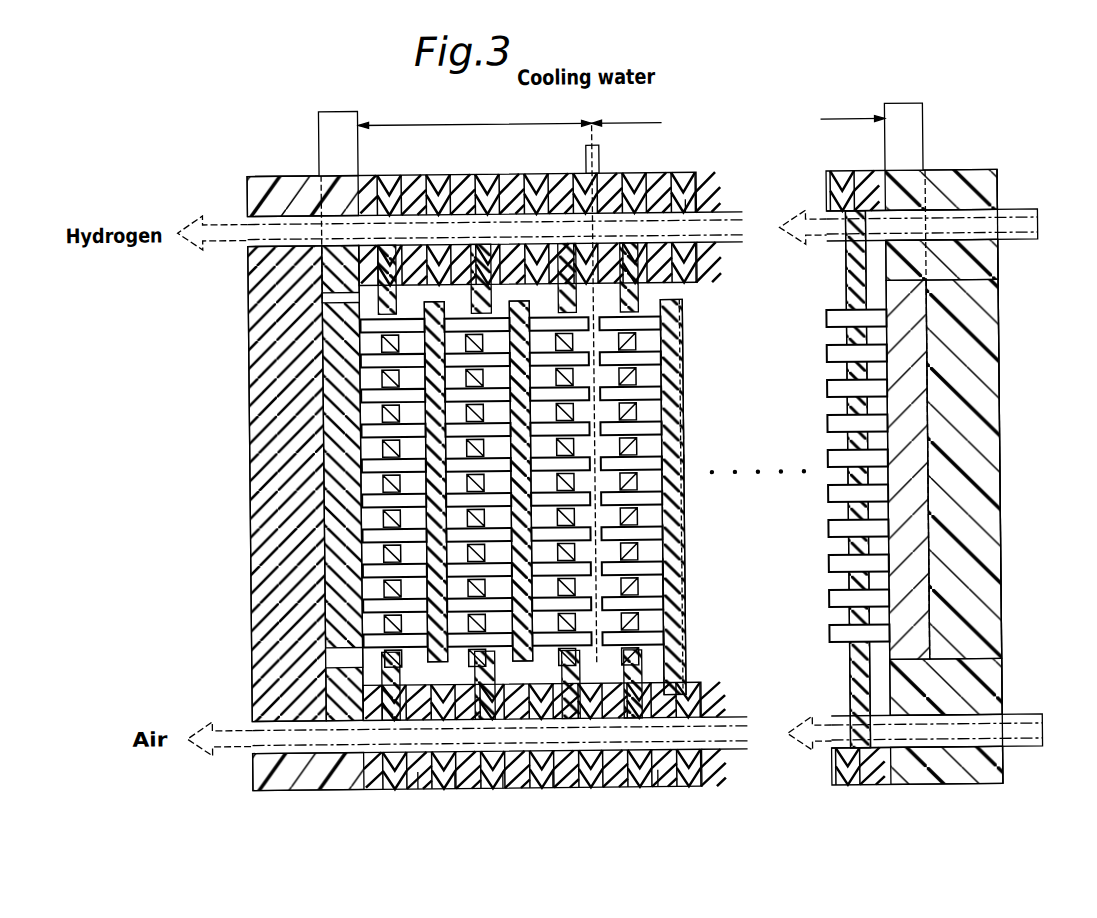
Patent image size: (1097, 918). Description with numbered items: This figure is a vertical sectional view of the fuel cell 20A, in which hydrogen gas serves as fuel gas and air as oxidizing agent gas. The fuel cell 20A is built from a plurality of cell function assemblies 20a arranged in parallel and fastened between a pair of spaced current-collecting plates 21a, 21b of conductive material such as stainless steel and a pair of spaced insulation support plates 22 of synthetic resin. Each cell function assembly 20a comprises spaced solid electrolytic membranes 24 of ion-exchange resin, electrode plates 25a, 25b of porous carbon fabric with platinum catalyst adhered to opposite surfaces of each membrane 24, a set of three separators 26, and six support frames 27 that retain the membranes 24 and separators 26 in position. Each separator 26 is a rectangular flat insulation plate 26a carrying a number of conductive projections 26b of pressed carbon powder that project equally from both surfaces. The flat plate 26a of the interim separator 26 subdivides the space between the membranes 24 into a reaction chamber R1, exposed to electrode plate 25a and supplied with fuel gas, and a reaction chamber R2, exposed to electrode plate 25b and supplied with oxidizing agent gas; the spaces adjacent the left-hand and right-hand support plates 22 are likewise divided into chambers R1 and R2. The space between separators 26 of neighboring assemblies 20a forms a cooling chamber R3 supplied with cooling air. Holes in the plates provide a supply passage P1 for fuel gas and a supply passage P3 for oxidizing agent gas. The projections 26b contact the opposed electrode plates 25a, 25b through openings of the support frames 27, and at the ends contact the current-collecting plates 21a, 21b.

The fuel cell 20A is at (1020, 175).
The cell function assembly 20a is at (480, 123).
The current-collecting plate 21a is at (322, 140).
The current-collecting plate 21b is at (920, 155).
The insulation support plate 22 is at (256, 372).
The solid electrolytic membrane 24 is at (439, 174).
The electrode plate 25a is at (675, 431).
The electrode plate 25b is at (678, 463).
The separator 26 is at (683, 540).
The flat plate 26a is at (682, 584).
The projection 26b is at (682, 640).
The support frame 27 is at (402, 174).
The supply passage of fuel gas P1 is at (688, 213).
The supply passage of oxidizing agent gas P3 is at (660, 787).
The reaction chamber R1 is at (422, 797).
The reaction chamber R2 is at (459, 797).
The cooling chamber R3 is at (660, 338).